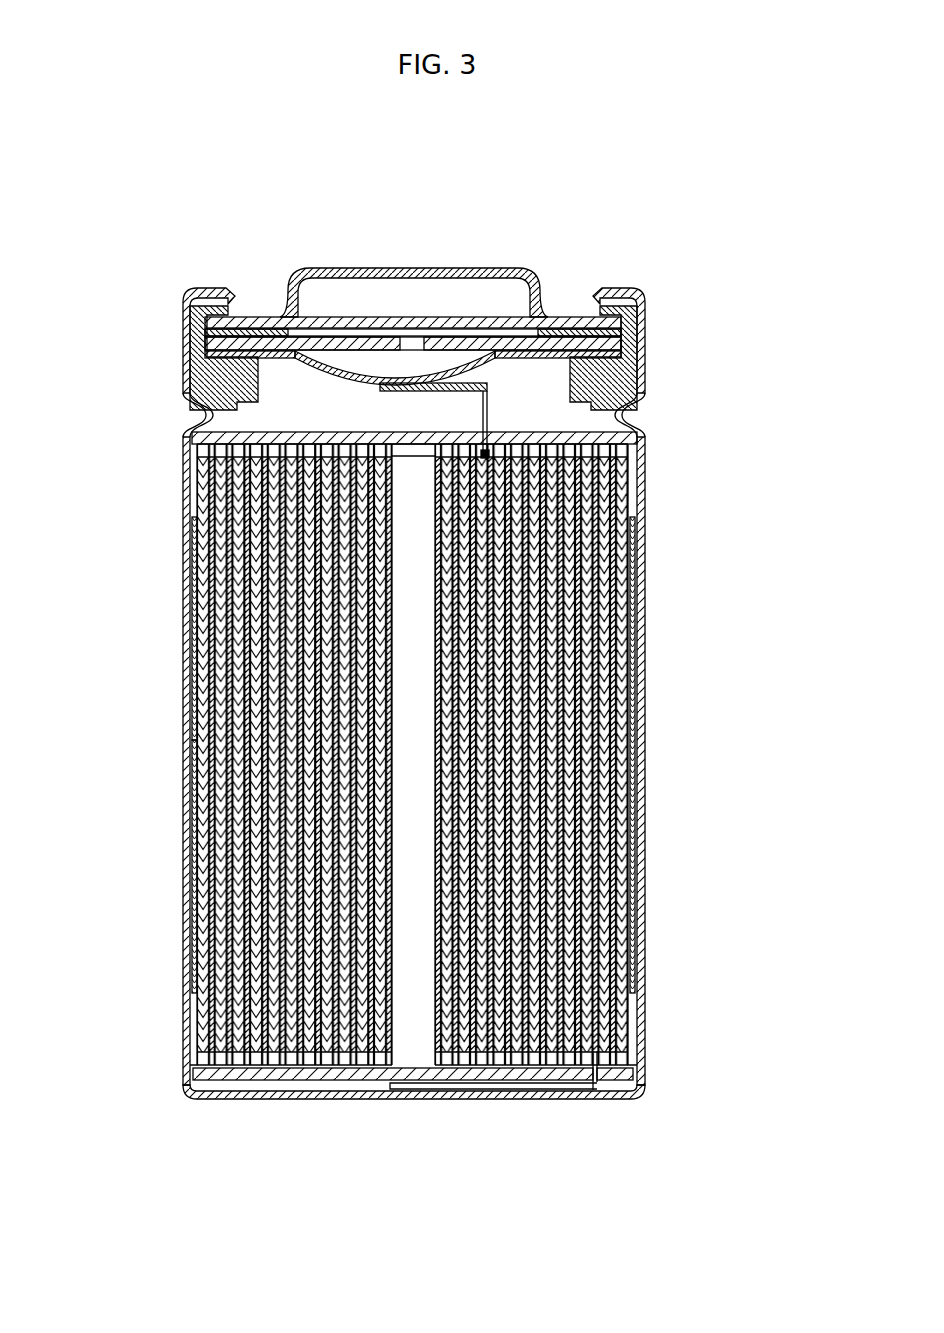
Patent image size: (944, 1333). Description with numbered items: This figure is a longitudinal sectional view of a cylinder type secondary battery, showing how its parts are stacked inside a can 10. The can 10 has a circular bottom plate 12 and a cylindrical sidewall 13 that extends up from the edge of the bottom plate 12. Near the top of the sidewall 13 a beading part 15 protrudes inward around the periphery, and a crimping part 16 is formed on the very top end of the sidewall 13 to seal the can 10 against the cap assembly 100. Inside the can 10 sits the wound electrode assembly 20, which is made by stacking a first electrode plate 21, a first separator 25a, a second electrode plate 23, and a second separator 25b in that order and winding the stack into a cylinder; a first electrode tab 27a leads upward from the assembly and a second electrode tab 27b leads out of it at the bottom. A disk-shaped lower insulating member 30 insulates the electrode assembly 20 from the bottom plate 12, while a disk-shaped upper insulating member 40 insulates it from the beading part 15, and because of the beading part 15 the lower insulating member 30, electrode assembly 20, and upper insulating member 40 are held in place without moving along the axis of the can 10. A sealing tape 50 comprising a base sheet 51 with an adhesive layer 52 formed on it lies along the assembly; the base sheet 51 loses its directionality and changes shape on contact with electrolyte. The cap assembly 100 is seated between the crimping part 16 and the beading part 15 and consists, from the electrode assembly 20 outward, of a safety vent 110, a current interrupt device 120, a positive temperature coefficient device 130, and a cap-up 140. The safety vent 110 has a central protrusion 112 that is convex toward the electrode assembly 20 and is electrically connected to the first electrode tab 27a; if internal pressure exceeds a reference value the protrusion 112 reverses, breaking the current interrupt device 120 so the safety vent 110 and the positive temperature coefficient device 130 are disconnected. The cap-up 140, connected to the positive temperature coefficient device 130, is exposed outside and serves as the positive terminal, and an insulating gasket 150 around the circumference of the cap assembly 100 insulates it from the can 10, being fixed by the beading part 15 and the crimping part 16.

The can 10 is at (188, 467).
The circular bottom plate 12 is at (427, 1100).
The cylindrical sidewall 13 is at (187, 570).
The beading part 15 is at (197, 412).
The crimping part 16 is at (218, 292).
The electrode assembly 20 is at (780, 432).
The first electrode plate 21 is at (600, 608).
The second electrode plate 23 is at (620, 533).
The first separator 25a is at (617, 577).
The second separator 25b is at (640, 493).
The first electrode tab 27a is at (490, 414).
The second electrode tab 27b is at (640, 1078).
The lower insulating member 30 is at (262, 1075).
The upper insulating member 40 is at (190, 438).
The sealing tape 50 is at (102, 690).
The base sheet 51 is at (187, 687).
The adhesive layer 52 is at (187, 778).
The cap assembly 100 is at (547, 186).
The safety vent 110 is at (318, 327).
The protrusion 112 is at (361, 336).
The current interrupt device 120 is at (477, 347).
The positive temperature coefficient device 130 is at (567, 345).
The cap-up 140 is at (409, 268).
The insulating gasket 150 is at (616, 292).